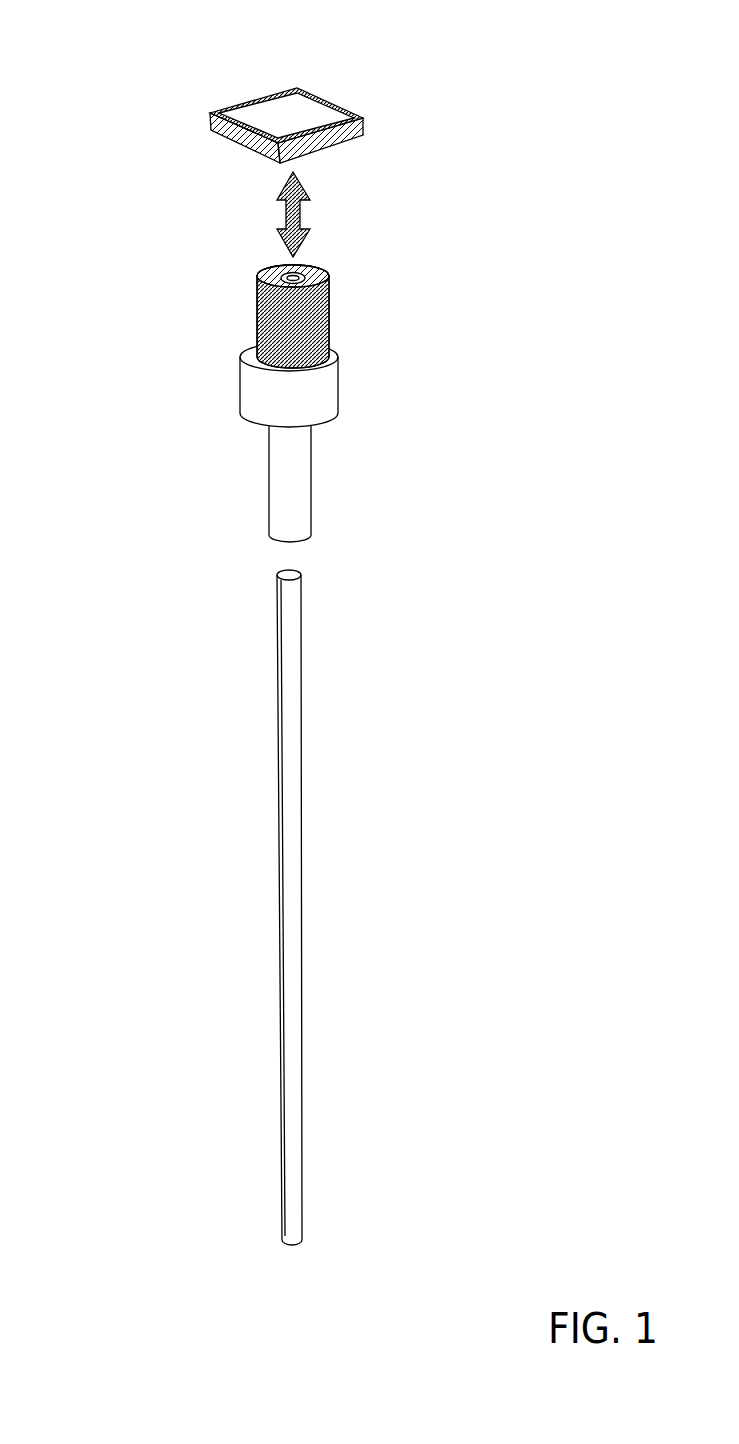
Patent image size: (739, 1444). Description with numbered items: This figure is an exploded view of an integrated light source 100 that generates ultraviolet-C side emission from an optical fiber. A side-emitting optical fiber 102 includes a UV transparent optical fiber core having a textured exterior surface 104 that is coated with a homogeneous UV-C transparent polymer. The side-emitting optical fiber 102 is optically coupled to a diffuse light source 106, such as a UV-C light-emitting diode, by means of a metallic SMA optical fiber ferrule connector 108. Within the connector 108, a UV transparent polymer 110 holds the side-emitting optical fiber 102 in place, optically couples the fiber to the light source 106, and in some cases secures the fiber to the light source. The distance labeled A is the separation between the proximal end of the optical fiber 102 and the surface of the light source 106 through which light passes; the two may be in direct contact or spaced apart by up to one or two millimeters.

The integrated light source 100 is at (220, 53).
The side-emitting optical fiber 102 is at (435, 907).
The textured exterior surface 104 is at (297, 668).
The diffuse light source 106 is at (363, 118).
The metallic SMA optical fiber ferrule connector 108 is at (337, 393).
The UV transparent polymer 110 is at (329, 310).